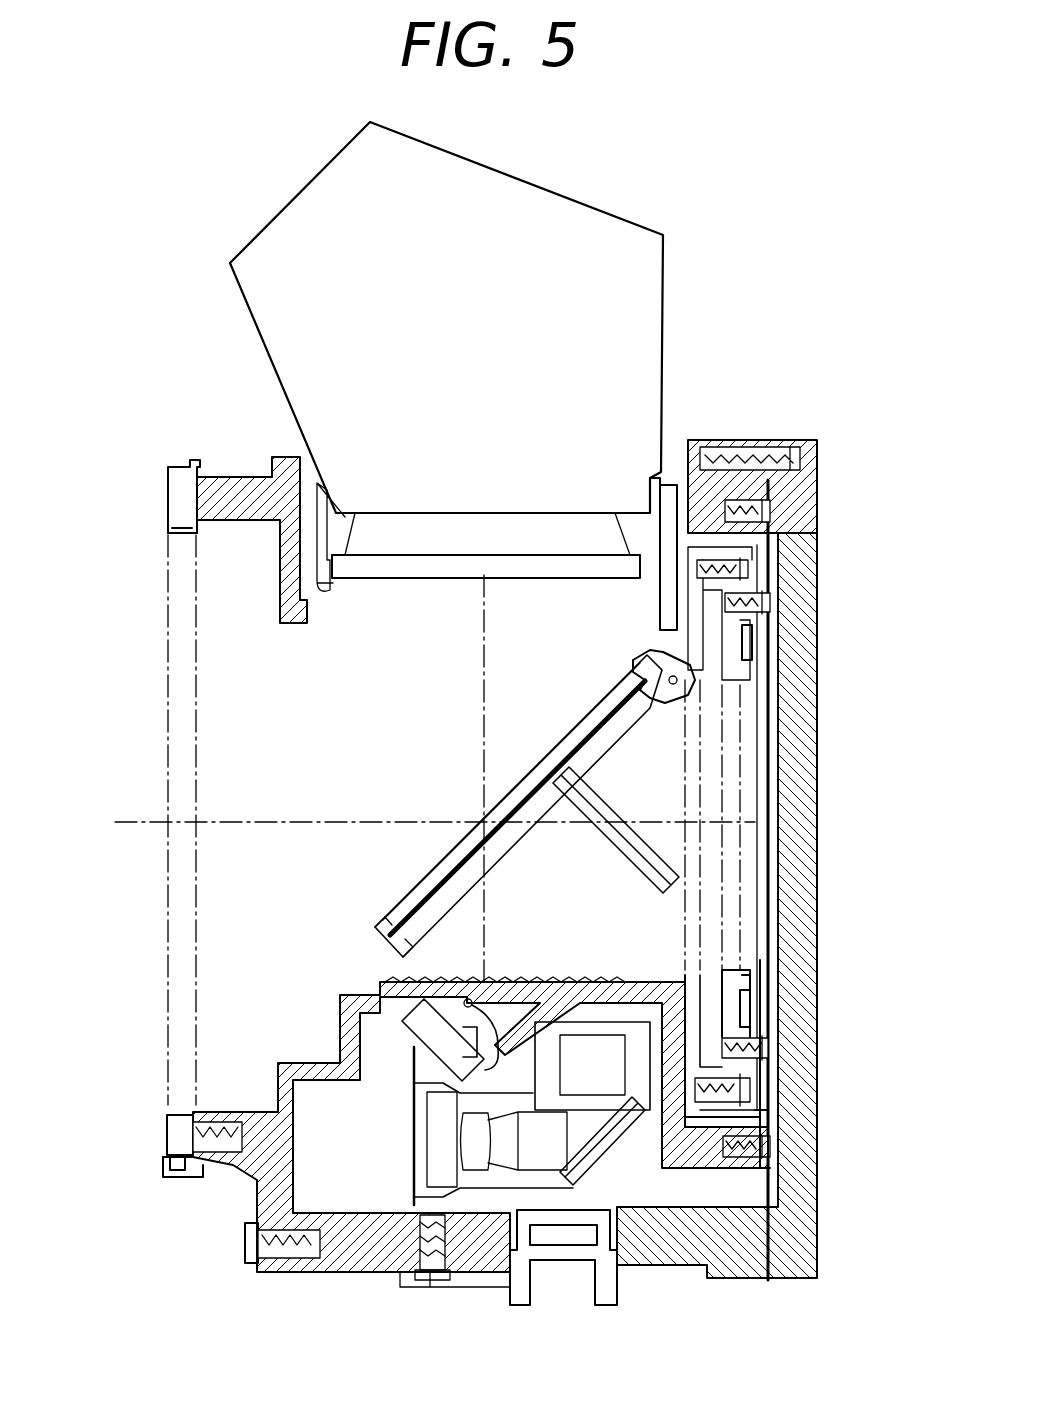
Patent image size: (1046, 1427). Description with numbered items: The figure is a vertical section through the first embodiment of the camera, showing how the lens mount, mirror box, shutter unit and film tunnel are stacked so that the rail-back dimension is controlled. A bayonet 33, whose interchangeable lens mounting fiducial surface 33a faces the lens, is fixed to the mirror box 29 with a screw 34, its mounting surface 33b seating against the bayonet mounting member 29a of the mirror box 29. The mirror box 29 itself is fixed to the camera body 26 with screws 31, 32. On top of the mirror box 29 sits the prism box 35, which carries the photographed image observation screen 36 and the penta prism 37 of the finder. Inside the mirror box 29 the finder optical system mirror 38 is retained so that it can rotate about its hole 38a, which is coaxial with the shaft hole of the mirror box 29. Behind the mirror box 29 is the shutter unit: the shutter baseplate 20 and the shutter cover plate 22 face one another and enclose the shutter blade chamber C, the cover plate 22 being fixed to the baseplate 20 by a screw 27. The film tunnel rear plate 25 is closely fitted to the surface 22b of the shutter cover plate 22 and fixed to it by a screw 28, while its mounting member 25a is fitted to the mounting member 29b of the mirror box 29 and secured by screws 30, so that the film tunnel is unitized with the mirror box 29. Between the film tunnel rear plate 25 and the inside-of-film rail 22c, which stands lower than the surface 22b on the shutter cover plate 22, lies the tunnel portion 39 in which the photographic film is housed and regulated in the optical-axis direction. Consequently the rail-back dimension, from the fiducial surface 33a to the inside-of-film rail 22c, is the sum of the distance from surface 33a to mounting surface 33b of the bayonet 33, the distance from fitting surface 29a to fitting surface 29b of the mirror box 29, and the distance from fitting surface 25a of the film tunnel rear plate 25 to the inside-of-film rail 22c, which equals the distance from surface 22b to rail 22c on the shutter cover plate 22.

The penta prism 37 is at (586, 212).
The photographed image observation screen 36 is at (385, 580).
The prism box 35 is at (315, 488).
The mirror box 29 is at (235, 478).
The bayonet 33 is at (166, 485).
The interchangeable lens mounting fiducial surface 33a is at (167, 520).
The mounting surface 33b is at (207, 1175).
The screw 32 is at (803, 458).
The screw 30 is at (770, 510).
The screw 27 is at (750, 570).
The screw 28 is at (770, 602).
The inside-of-film rail 22c is at (752, 660).
The film tunnel rear plate 25 is at (770, 730).
The mounting member 25a is at (742, 1170).
The camera body 26 is at (810, 1262).
The finder optical system mirror 38 is at (462, 897).
The hole 38a is at (673, 686).
The shutter baseplate 20 is at (690, 975).
The shutter blade chamber C is at (705, 975).
The shutter cover plate 22 is at (730, 975).
The tunnel portion 39 is at (745, 990).
The surface 22b is at (757, 1040).
The screw 34 is at (170, 1130).
The bayonet mounting member 29a is at (180, 1172).
The mounting member for the film tunnel rear plate 29b is at (772, 1165).
The screw 31 is at (250, 1245).